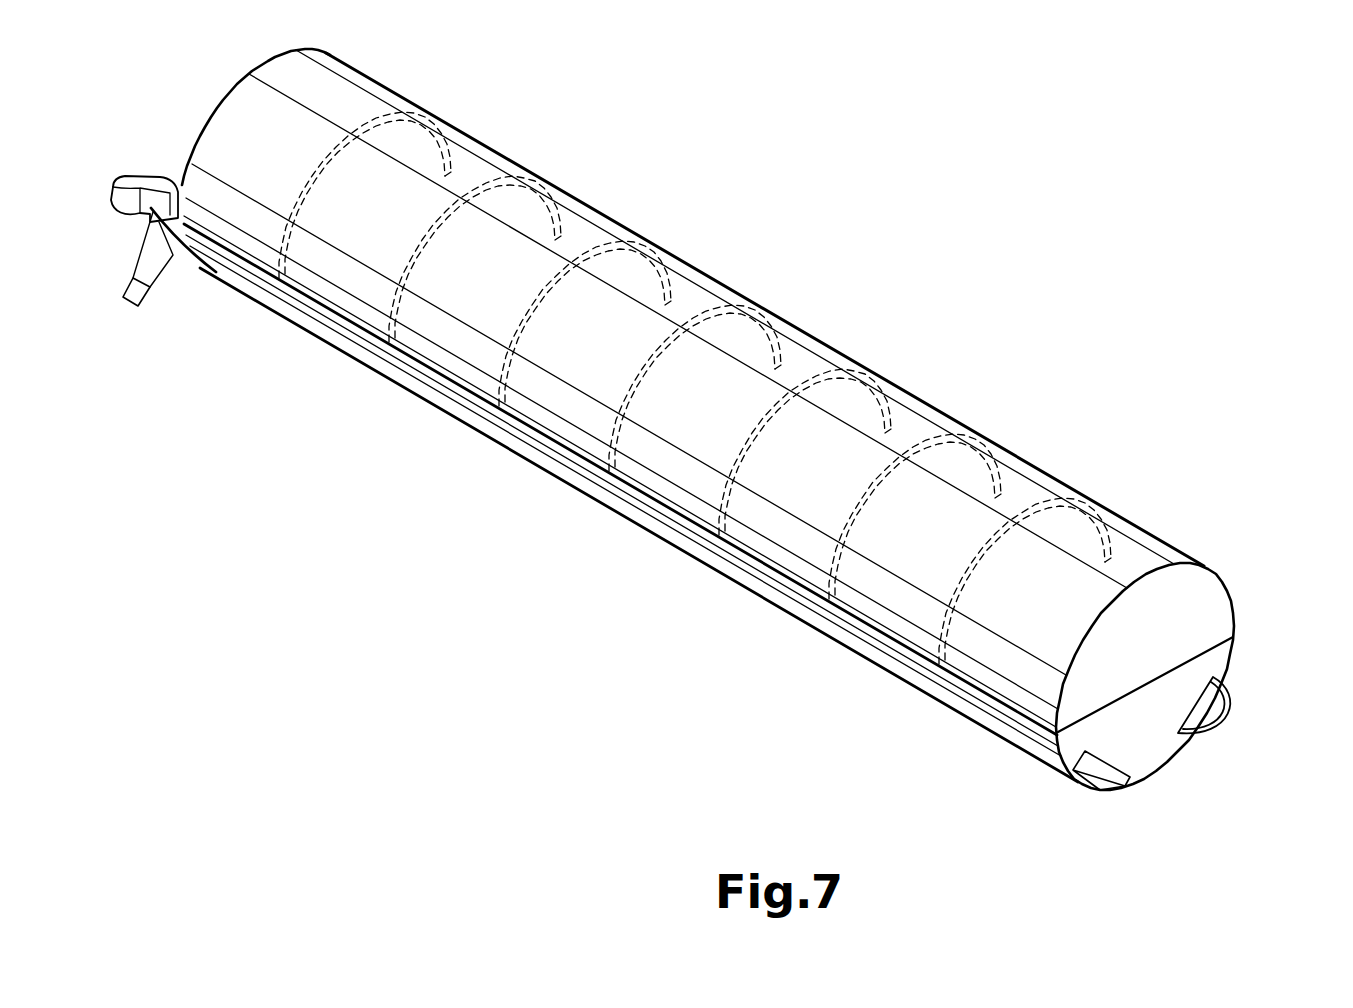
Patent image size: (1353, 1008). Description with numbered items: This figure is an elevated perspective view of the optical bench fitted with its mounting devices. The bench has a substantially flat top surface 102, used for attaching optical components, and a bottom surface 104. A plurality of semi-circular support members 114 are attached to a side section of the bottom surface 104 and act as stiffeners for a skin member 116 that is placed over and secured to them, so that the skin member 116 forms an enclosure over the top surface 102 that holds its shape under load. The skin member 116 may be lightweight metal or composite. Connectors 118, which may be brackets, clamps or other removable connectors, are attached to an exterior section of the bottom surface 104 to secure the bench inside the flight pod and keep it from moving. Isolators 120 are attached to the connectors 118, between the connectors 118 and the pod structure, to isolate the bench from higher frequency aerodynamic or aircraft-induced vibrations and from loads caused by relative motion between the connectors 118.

The top surface 102 is at (700, 473).
The bottom surface 104 is at (1160, 750).
The support members 114 is at (877, 378).
The skin member 116 is at (600, 208).
The connectors 118 is at (170, 270).
The isolators 120 is at (125, 182).